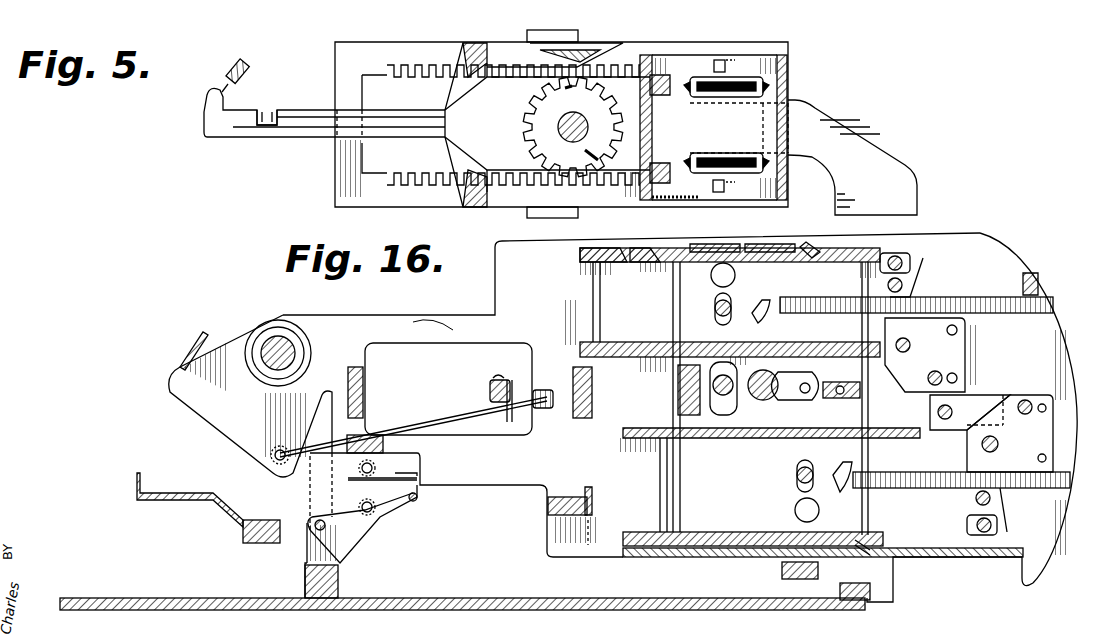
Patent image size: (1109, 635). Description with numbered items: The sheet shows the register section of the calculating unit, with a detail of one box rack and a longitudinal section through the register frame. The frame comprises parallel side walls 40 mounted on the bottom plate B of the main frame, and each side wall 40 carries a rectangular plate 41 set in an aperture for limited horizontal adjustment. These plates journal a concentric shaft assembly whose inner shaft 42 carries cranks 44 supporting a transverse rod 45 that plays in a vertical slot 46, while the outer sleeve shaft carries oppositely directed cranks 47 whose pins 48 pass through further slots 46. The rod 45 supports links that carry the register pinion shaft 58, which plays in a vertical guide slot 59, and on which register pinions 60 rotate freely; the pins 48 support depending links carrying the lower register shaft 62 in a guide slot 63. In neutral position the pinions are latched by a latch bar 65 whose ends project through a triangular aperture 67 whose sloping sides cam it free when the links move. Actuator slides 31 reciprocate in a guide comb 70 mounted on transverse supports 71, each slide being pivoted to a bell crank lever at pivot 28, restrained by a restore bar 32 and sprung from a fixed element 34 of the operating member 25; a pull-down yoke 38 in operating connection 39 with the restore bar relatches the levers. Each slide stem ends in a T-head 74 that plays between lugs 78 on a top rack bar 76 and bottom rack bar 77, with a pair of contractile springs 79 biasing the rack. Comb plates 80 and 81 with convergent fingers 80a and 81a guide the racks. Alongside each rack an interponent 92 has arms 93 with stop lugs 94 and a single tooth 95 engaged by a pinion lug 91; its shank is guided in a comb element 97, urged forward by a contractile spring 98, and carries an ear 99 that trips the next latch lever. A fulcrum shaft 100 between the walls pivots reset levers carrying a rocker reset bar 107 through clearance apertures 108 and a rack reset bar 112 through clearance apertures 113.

In FIG. 16, the operating member 25 is at (255, 545).
In FIG. 16, the pivot 28 is at (282, 338).
In FIG. 5, the actuator slide 31 is at (905, 190).
In FIG. 16, the restore bar 32 is at (488, 392).
In FIG. 16, the fixed element 34 is at (220, 500).
In FIG. 16, the pull-down yoke 38 is at (196, 355).
In FIG. 16, the operating connection 39 is at (430, 420).
In FIG. 16, the side wall 40 is at (512, 279).
In FIG. 16, the rectangular plate 41 is at (678, 318).
In FIG. 16, the inner shaft 42 is at (757, 399).
In FIG. 16, the crank 44 is at (725, 416).
In FIG. 16, the transverse rod 45 is at (730, 357).
In FIG. 16, the vertical slot 46 is at (678, 388).
In FIG. 16, the crank 47 is at (758, 420).
In FIG. 16, the pin 48 is at (812, 370).
In FIG. 16, the register pinion shaft 58 is at (715, 310).
In FIG. 16, the vertical guide slot 59 is at (728, 292).
In FIG. 5, the register pinion 60 is at (545, 110).
In FIG. 16, the register shaft 62 is at (800, 470).
In FIG. 16, the vertical guide slot 63 is at (820, 510).
In FIG. 16, the latch bar 65 is at (754, 316).
In FIG. 16, the triangular aperture 67 is at (764, 300).
In FIG. 16, the guide comb 70 is at (592, 490).
In FIG. 16, the transverse support 71 is at (365, 388).
In FIG. 5, the T-head 74 is at (660, 153).
In FIG. 5, the top rack bar 76 is at (416, 48).
In FIG. 5, the bottom rack bar 77 is at (412, 205).
In FIG. 5, the lug 78 is at (722, 60).
In FIG. 5, the contractile spring 79 is at (730, 158).
In FIG. 16, the comb plate 80 is at (593, 340).
In FIG. 16, the finger 80a is at (638, 342).
In FIG. 5, the comb plate 81 is at (700, 232).
In FIG. 16, the comb plate 81 is at (710, 352).
In FIG. 16, the finger 81a is at (805, 354).
In FIG. 5, the lug 91 is at (560, 88).
In FIG. 5, the interponent 92 is at (395, 112).
In FIG. 5, the arm 93 is at (462, 32).
In FIG. 5, the stop lug 94 is at (535, 31).
In FIG. 5, the tooth 95 is at (575, 63).
In FIG. 16, the comb element 97 is at (925, 262).
In FIG. 5, the contractile spring 98 is at (248, 60).
In FIG. 5, the ear 99 is at (268, 110).
In FIG. 16, the fulcrum shaft 100 is at (885, 284).
In FIG. 16, the reset bar 107 is at (920, 375).
In FIG. 16, the clearance aperture 108 is at (965, 375).
In FIG. 5, the reset bar 112 is at (925, 232).
In FIG. 16, the reset bar 112 is at (985, 528).
In FIG. 16, the clearance aperture 113 is at (908, 262).
In FIG. 16, the bottom plate B is at (430, 610).